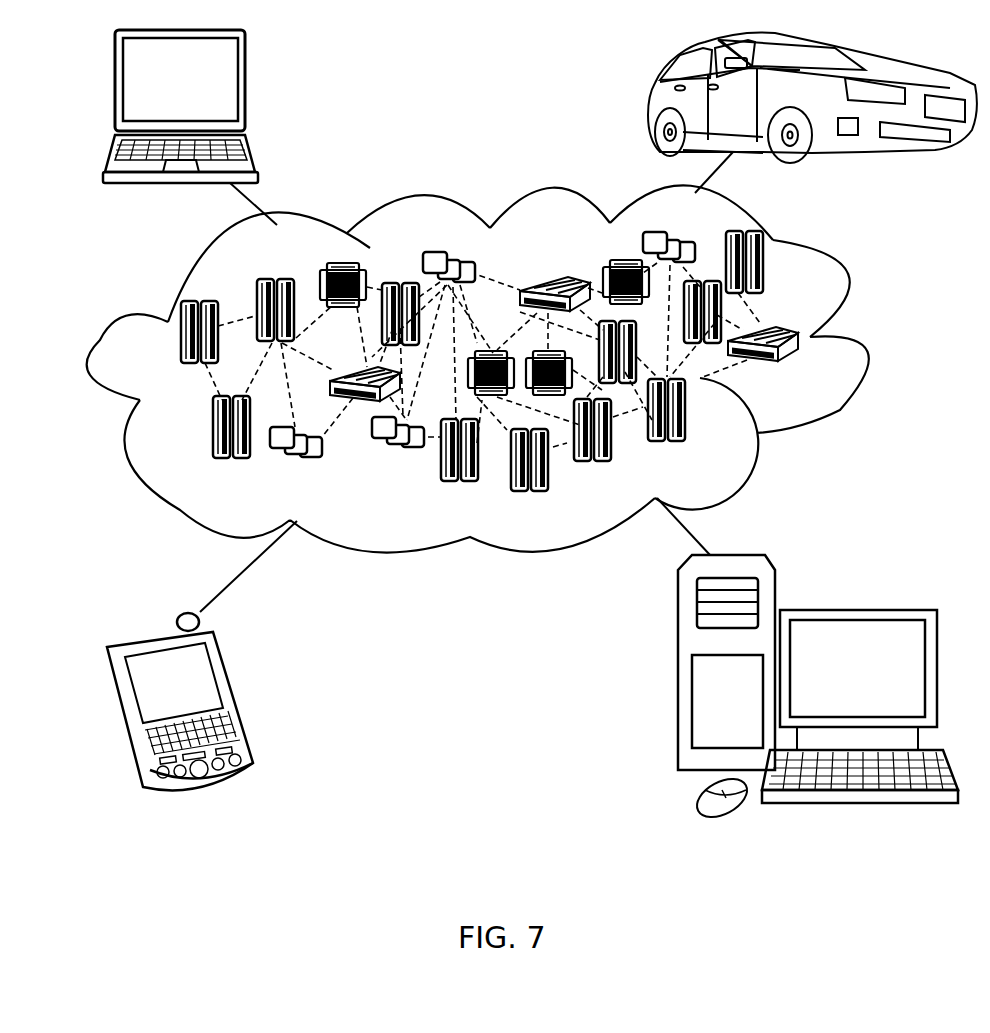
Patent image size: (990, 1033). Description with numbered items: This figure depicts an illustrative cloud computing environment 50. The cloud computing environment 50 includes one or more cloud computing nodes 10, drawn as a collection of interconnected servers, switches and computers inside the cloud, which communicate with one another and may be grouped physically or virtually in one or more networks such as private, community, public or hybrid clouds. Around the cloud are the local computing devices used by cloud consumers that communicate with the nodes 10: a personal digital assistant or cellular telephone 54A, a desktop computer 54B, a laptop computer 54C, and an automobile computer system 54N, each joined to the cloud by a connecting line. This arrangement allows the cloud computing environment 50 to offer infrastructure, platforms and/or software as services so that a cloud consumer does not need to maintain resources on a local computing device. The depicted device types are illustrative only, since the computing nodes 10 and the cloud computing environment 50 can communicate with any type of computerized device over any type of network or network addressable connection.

The cloud computing environment 50 is at (855, 344).
The cloud computing node 10 is at (800, 368).
The personal digital assistant or cellular telephone 54A is at (238, 697).
The desktop computer 54B is at (856, 607).
The laptop computer 54C is at (247, 89).
The automobile computer system 54N is at (650, 98).